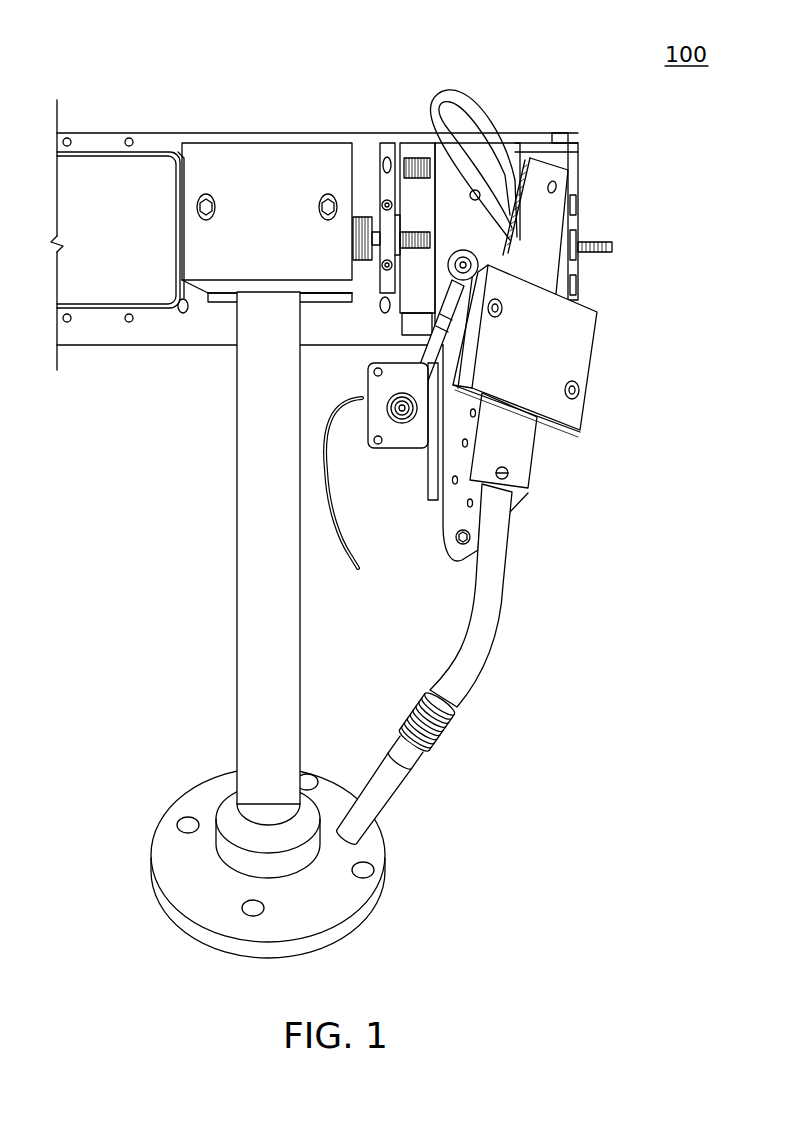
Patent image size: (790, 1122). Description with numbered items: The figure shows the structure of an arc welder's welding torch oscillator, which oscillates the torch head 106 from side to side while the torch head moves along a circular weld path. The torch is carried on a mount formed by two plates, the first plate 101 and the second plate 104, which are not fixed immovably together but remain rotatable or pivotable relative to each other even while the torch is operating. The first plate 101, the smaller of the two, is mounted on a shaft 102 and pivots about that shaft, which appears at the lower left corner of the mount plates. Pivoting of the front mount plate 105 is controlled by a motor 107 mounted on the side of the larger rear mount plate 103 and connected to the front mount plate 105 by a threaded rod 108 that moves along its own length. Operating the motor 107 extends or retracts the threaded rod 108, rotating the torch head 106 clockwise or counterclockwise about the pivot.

The first plate 101 is at (268, 143).
The shaft 102 is at (237, 461).
The rear mount plate 103 is at (578, 278).
The second plate 104 is at (577, 350).
The front mount plate 105 is at (550, 460).
The torch head 106 is at (450, 737).
The motor 107 is at (396, 448).
The threaded rod 108 is at (432, 345).